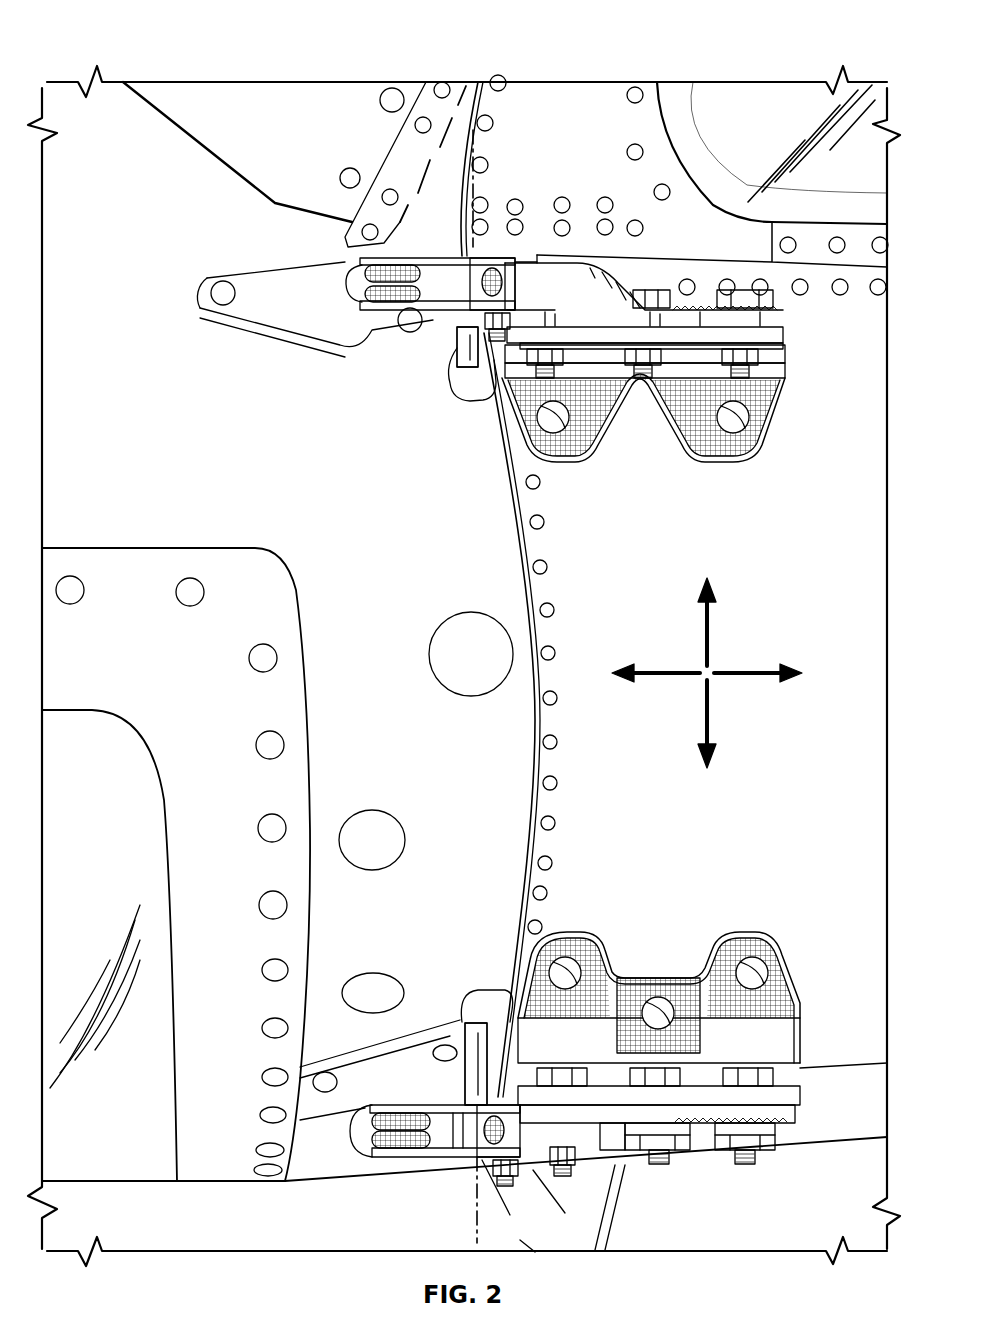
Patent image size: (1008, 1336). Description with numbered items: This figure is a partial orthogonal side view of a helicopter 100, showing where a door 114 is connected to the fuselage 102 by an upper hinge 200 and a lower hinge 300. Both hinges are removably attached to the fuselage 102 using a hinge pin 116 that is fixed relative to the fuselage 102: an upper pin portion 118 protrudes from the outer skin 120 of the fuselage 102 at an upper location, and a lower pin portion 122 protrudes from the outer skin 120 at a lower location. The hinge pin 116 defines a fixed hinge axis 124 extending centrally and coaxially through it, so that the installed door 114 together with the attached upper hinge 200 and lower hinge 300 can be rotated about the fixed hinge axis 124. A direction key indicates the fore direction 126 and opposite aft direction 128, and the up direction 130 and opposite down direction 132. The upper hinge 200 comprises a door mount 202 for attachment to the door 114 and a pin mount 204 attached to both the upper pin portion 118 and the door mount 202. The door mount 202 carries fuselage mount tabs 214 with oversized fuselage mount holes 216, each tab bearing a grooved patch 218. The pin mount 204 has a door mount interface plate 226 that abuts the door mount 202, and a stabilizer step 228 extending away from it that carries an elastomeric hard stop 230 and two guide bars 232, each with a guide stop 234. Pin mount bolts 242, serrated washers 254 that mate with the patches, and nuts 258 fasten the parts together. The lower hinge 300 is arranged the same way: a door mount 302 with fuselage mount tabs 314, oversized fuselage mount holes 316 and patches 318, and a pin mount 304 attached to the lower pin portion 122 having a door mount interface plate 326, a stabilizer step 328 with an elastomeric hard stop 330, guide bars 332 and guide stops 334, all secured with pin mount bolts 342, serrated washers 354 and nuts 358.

The helicopter 100 is at (681, 66).
The fuselage 102 is at (232, 185).
The door 114 is at (825, 834).
The hinge pin 116 is at (462, 357).
The upper pin portion 118 is at (466, 355).
The outer skin 120 is at (259, 472).
The lower pin portion 122 is at (476, 1064).
The fixed hinge axis 124 is at (472, 160).
The fore direction 126 is at (668, 670).
The aft direction 128 is at (748, 676).
The up direction 130 is at (712, 630).
The down direction 132 is at (702, 712).
The upper hinge 200 is at (540, 162).
The door mount 202 is at (770, 382).
The pin mount 204 is at (600, 290).
The fuselage mount tabs 214 is at (560, 242).
The oversized fuselage mount holes 216 is at (576, 418).
The patch 218 is at (570, 448).
The door mount interface plate 226 is at (770, 330).
The stabilizer step 228 is at (522, 273).
The elastomeric hard stop 230 is at (478, 278).
The guide bars 232 is at (365, 258).
The guide stop 234 is at (333, 268).
The pin mount bolts 242 is at (742, 290).
The serrated washers 254 is at (655, 300).
The nuts 258 is at (760, 358).
The lower hinge 300 is at (728, 1176).
The door mount 302 is at (800, 1047).
The pin mount 304 is at (640, 1170).
The fuselage mount tabs 314 is at (578, 950).
The oversized fuselage mount holes 316 is at (553, 975).
The patch 318 is at (572, 945).
The door mount interface plate 326 is at (788, 1110).
The stabilizer step 328 is at (505, 1190).
The elastomeric hard stop 330 is at (486, 1145).
The guide bars 332 is at (396, 1112).
The guide stop 334 is at (370, 1100).
The pin mount bolts 342 is at (752, 1065).
The serrated washers 354 is at (785, 1128).
The nuts 358 is at (760, 1145).